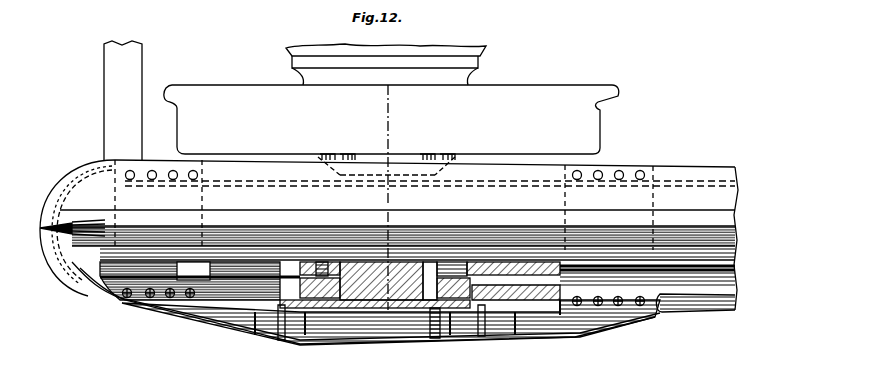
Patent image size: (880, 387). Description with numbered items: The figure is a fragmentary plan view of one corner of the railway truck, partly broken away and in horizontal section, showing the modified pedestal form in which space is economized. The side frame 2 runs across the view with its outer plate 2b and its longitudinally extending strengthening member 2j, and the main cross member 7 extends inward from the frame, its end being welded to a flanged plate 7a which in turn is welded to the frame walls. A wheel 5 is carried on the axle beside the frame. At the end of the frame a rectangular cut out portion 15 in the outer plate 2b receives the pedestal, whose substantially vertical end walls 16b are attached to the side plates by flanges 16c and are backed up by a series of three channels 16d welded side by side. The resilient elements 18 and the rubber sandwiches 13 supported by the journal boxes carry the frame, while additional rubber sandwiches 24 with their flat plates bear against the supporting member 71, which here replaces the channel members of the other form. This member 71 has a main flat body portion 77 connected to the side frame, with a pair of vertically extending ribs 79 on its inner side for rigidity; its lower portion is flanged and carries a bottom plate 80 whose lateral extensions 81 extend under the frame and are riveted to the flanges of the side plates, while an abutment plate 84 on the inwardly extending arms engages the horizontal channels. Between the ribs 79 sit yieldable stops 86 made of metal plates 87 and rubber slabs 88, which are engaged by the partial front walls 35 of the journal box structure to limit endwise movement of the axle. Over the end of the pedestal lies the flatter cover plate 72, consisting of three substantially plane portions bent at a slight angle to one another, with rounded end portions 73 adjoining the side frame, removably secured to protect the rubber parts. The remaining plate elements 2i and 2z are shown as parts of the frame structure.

The side frame 2 is at (641, 160).
The outer plate 2b is at (714, 300).
The hull side plate 2i is at (703, 208).
The longitudinally extending strengthening member 2j is at (285, 379).
The hull plate 2z is at (228, 380).
The wheel 5 is at (587, 128).
The main cross member 7 is at (104, 93).
The flanged plate 7a is at (84, 293).
The rubber sandwich 13 is at (388, 352).
The cut out portion 15 is at (252, 330).
The end wall 16b is at (216, 318).
The flange 16c is at (556, 332).
The channel 16d is at (185, 305).
The resilient element 18 is at (107, 222).
The rubber sandwich 24 is at (356, 262).
The partial front wall 35 is at (328, 262).
The supporting member 71 is at (408, 313).
The cover plate 72 is at (442, 338).
The rounded end portion 73 is at (108, 300).
The flat body portion 77 is at (364, 310).
The rib 79 is at (258, 322).
The bottom plate 80 is at (532, 320).
The lateral extension 81 is at (208, 168).
The abutment plate 84 is at (253, 381).
The yieldable stop 86 is at (320, 276).
The metal plate 87 is at (282, 330).
The rubber slab 88 is at (318, 262).